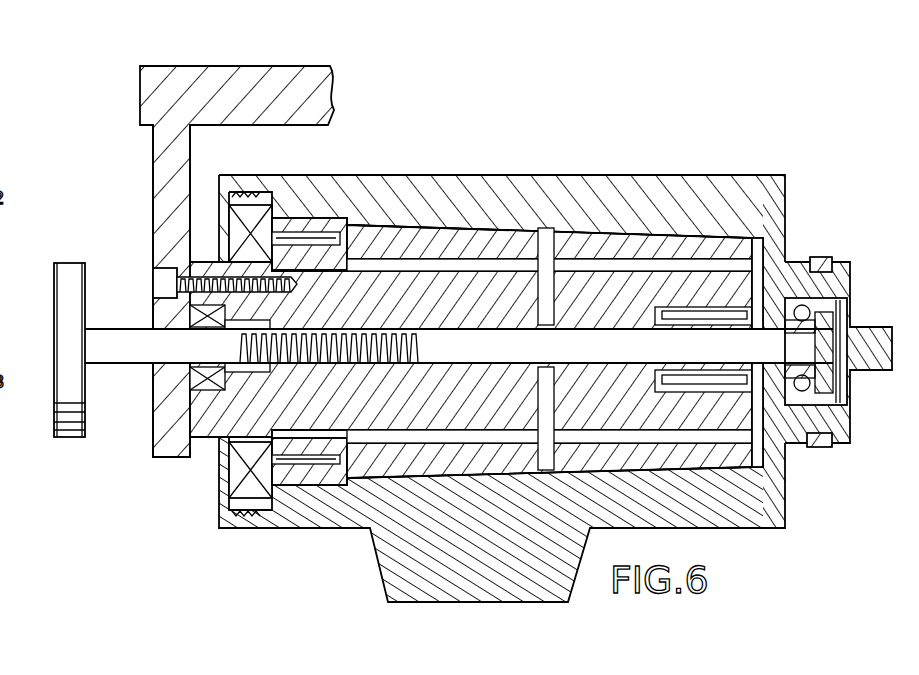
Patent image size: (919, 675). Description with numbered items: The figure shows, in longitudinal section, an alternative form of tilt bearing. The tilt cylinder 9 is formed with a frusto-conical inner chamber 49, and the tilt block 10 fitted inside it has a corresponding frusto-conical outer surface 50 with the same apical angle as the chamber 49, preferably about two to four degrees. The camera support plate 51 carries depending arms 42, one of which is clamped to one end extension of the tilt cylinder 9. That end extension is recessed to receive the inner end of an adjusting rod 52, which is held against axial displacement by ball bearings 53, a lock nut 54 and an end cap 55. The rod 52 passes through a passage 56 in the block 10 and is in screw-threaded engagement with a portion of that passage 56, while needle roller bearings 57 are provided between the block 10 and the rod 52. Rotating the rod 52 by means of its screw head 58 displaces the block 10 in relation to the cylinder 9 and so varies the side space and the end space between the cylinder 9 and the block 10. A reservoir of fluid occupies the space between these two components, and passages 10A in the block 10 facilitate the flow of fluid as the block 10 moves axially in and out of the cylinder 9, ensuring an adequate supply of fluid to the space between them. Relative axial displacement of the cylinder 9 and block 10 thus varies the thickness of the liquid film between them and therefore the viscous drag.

The tilt cylinder 9 is at (700, 196).
The tilt block 10 is at (645, 240).
The passages 10A is at (398, 266).
The depending arms 42 is at (156, 168).
The frusto-conical inner chamber 49 is at (740, 237).
The frusto-conical outer surface 50 is at (600, 224).
The camera support plate 51 is at (300, 66).
The adjusting rod 52 is at (117, 352).
The ball bearings 53 is at (800, 392).
The lock nut 54 is at (830, 377).
The end cap 55 is at (848, 327).
The passage 56 is at (272, 327).
The needle roller bearings 57 is at (787, 263).
The screw head 58 is at (78, 292).